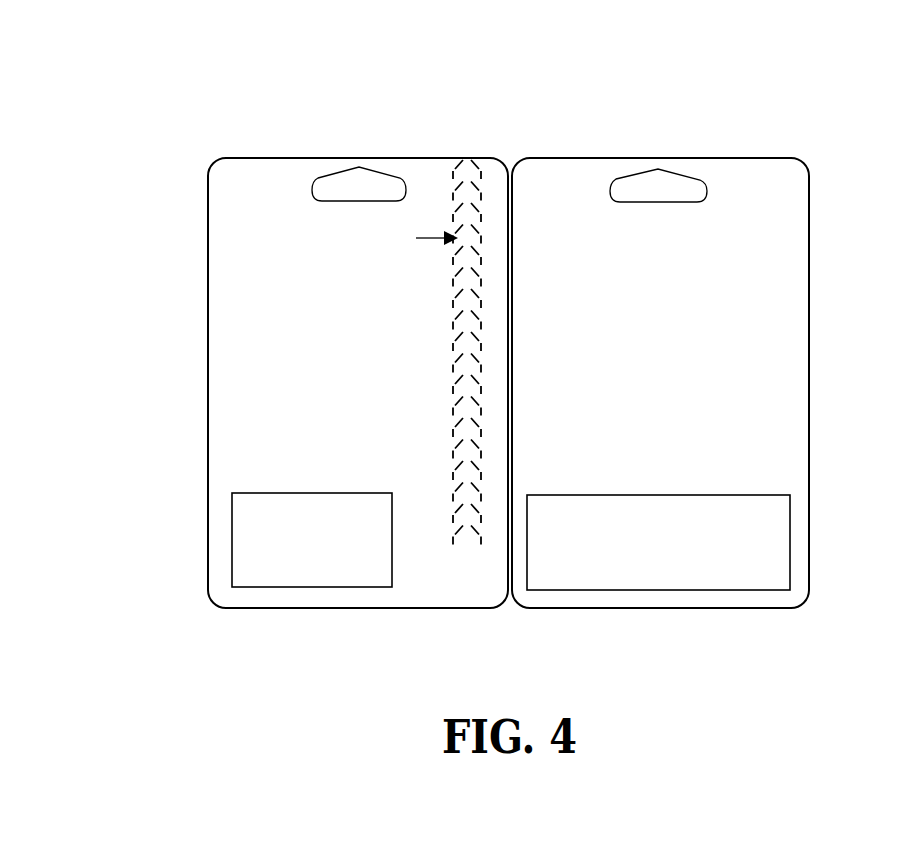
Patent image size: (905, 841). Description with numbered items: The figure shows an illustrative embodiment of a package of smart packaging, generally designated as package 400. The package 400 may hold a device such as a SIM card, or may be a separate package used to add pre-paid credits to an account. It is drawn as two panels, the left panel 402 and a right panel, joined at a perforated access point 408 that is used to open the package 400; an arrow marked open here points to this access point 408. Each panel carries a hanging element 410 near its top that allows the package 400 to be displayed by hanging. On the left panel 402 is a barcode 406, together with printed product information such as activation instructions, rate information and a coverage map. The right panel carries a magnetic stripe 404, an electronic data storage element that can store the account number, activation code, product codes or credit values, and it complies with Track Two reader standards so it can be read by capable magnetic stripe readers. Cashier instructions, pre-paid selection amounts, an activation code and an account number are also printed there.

The package 400 is at (192, 50).
The first panel of card package 402 is at (208, 195).
The magnetic stripe 404 is at (776, 527).
The barcode 406 is at (247, 522).
The access point 408 is at (468, 158).
The hanging element 410 is at (635, 186).